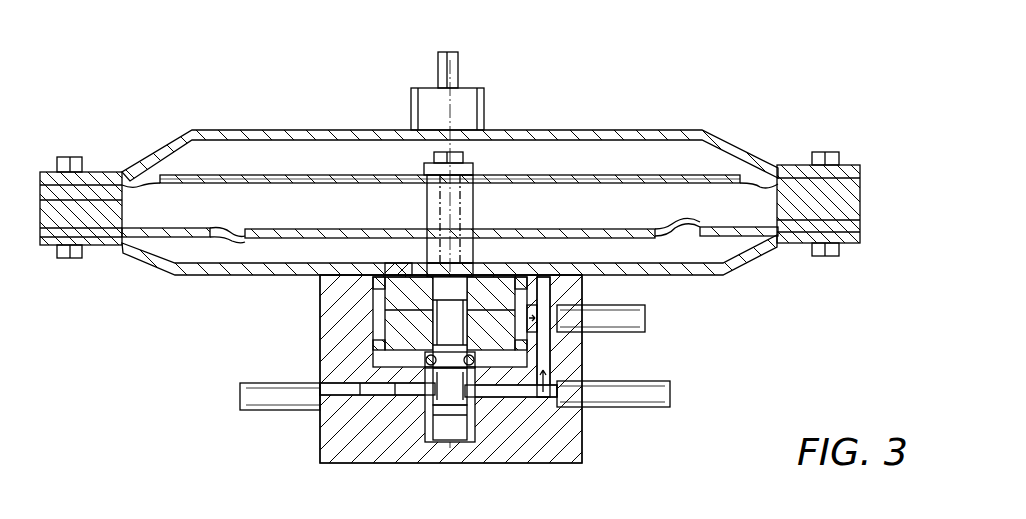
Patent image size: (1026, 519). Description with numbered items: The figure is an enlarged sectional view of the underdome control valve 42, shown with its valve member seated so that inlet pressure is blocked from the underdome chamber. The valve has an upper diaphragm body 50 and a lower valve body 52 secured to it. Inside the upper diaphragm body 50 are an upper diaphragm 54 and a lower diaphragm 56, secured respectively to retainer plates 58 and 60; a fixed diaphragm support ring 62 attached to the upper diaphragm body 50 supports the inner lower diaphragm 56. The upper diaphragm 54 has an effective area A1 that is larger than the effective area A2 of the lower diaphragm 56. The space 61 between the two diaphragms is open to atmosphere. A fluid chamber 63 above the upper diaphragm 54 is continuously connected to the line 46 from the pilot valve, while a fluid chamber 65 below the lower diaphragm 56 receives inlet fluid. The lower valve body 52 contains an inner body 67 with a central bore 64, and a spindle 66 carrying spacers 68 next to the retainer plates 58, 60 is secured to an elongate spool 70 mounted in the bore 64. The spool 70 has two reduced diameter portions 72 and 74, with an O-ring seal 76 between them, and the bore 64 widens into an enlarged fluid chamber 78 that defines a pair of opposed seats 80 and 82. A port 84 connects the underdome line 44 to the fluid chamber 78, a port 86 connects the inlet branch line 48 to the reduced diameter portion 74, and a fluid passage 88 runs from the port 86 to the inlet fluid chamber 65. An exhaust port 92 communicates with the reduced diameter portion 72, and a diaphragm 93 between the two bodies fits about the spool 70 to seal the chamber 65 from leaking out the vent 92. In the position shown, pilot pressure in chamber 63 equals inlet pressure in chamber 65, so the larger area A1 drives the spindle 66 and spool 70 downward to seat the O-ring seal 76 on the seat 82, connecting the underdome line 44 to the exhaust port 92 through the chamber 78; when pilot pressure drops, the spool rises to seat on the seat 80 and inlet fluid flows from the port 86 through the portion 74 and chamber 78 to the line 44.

The effective area of upper diaphragm A1 is at (122, 172).
The effective area of lower diaphragm A2 is at (700, 230).
The underdome control valve 42 is at (588, 120).
The underdome line 44 is at (252, 410).
The line from pilot valve 46 is at (458, 68).
The inlet branch line 48 is at (655, 393).
The upper diaphragm body 50 is at (450, 175).
The lower valve body 52 is at (318, 330).
The upper diaphragm 54 is at (628, 172).
The lower diaphragm 56 is at (640, 238).
The retainer plate 58 is at (365, 178).
The retainer plate 60 is at (340, 228).
The space between diaphragms 61 is at (280, 200).
The fixed diaphragm support ring 62 is at (160, 265).
The fluid chamber 63 is at (335, 152).
The central bore 64 is at (380, 312).
The fluid chamber 65 is at (278, 258).
The spindle 66 is at (455, 212).
The inner body 67 is at (495, 272).
The spacers 68 is at (428, 250).
The spool 70 is at (445, 330).
The reduced diameter portion 72 is at (345, 372).
The reduced diameter portion 74 is at (470, 410).
The O-ring seal 76 is at (426, 368).
The enlarged diameter fluid chamber 78 is at (358, 396).
The seat 80 is at (540, 340).
The seat 82 is at (580, 358).
The port 84 is at (395, 396).
The port 86 is at (582, 405).
The fluid passage 88 is at (575, 282).
The exhaust port 92 is at (645, 316).
The diaphragm 93 is at (400, 265).